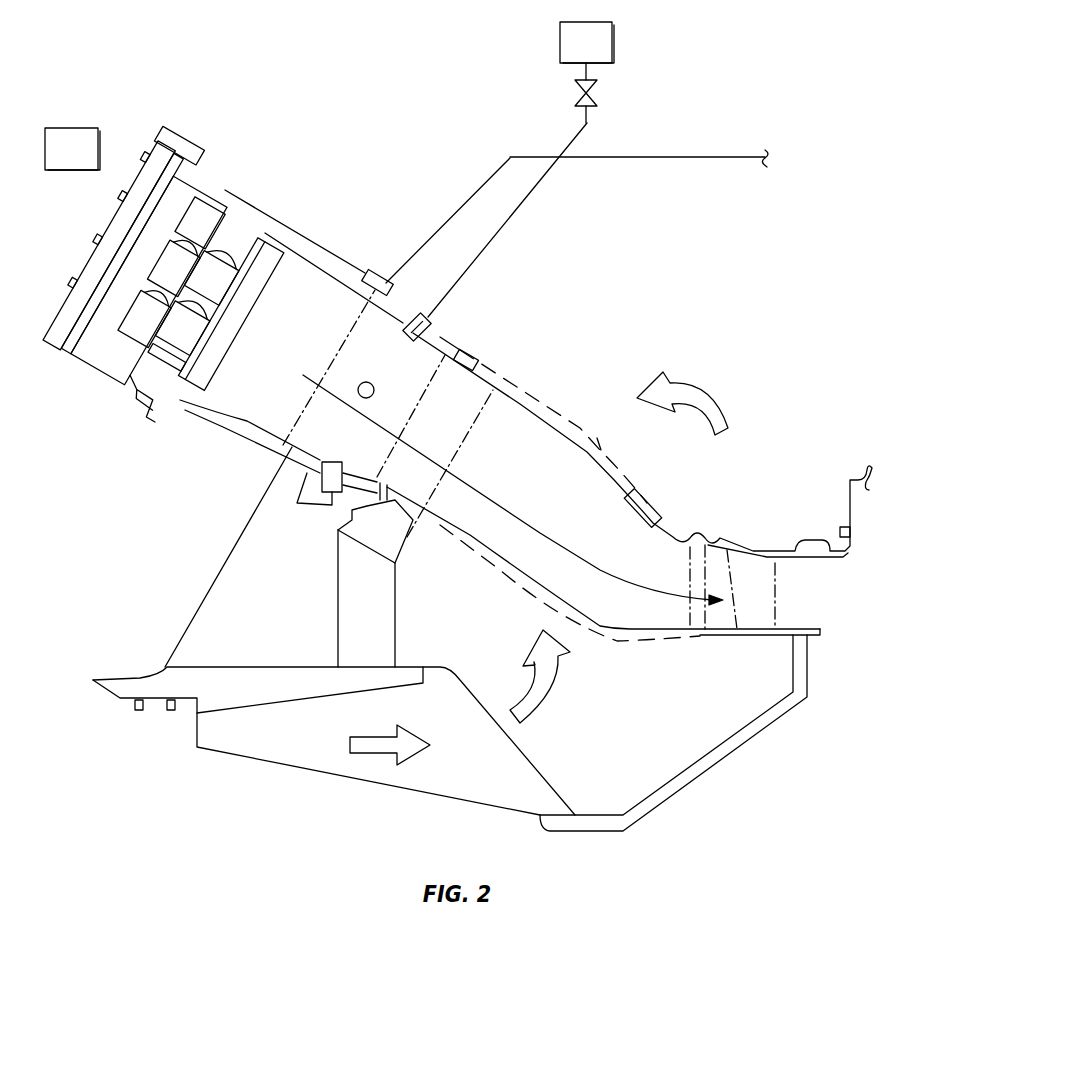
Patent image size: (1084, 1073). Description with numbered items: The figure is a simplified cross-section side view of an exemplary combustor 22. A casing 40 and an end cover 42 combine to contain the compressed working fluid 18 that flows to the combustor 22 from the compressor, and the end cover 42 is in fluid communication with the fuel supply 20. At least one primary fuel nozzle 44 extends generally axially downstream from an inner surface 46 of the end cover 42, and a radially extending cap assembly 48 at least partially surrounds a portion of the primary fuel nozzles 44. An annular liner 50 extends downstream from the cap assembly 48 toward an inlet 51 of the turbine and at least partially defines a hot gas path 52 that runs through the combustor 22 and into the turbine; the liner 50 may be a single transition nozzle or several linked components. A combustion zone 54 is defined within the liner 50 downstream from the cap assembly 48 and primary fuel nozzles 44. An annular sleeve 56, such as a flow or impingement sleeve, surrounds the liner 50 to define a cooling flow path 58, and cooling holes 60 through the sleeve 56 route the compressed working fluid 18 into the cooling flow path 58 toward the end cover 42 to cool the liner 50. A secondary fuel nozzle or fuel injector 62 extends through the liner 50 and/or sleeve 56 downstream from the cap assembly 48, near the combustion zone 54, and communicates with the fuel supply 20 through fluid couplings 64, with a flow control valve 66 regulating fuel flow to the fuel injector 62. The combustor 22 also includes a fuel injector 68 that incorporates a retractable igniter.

The compressed working fluid 18 is at (697, 383).
The fuel supply 20 is at (98, 146).
The combustor 22 is at (343, 167).
The casing 40 is at (432, 236).
The end cover 42 is at (72, 277).
The primary fuel nozzle 44 is at (222, 205).
The inner surface 46 is at (200, 190).
The cap assembly 48 is at (152, 398).
The annular liner 50 is at (303, 260).
The inlet 51 is at (793, 602).
The hot gas path 52 is at (413, 443).
The combustion zone 54 is at (259, 364).
The annular sleeve 56 is at (453, 343).
The cooling flow path 58 is at (400, 312).
The cooling holes 60 is at (557, 417).
The fuel injector 62 is at (441, 336).
The fluid couplings 64 is at (520, 213).
The flow control valve 66 is at (600, 92).
The fuel injector 68 is at (401, 342).